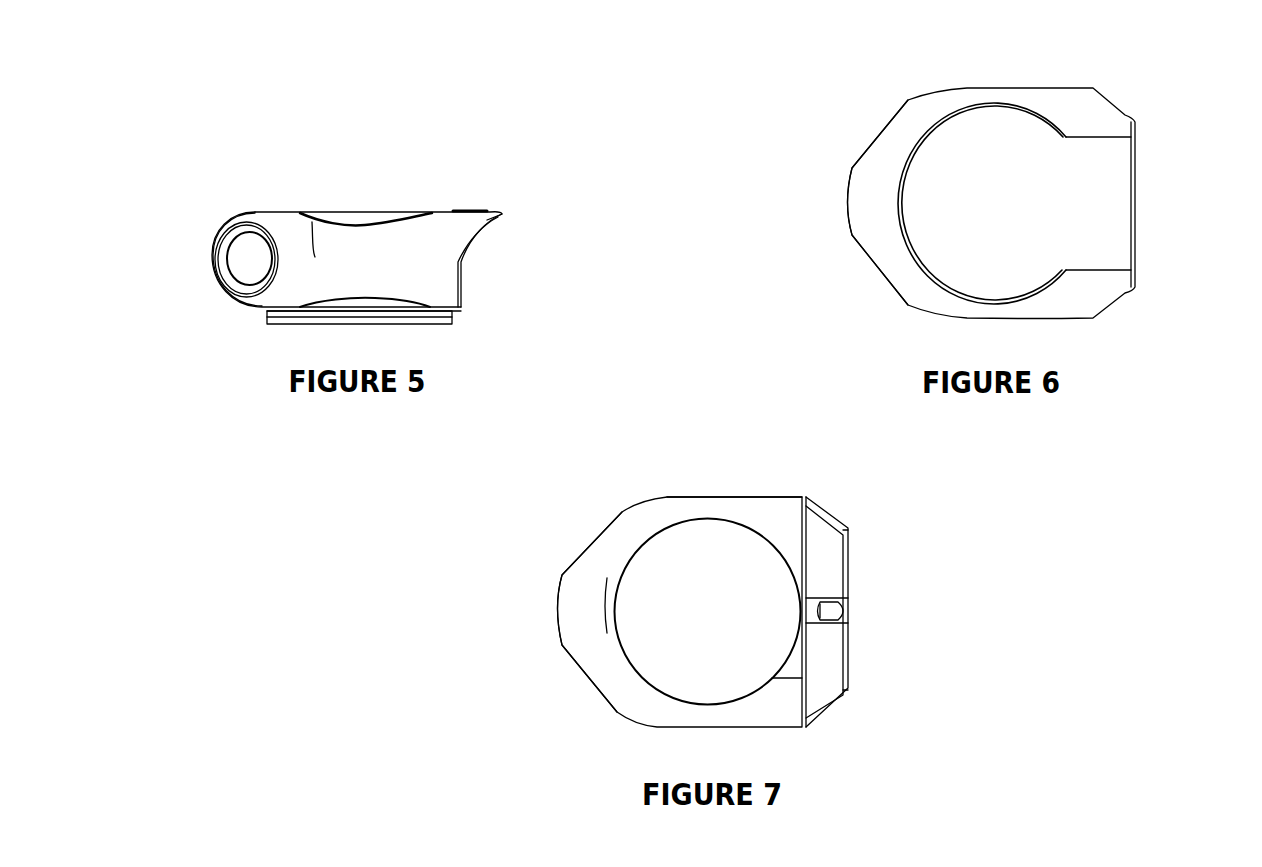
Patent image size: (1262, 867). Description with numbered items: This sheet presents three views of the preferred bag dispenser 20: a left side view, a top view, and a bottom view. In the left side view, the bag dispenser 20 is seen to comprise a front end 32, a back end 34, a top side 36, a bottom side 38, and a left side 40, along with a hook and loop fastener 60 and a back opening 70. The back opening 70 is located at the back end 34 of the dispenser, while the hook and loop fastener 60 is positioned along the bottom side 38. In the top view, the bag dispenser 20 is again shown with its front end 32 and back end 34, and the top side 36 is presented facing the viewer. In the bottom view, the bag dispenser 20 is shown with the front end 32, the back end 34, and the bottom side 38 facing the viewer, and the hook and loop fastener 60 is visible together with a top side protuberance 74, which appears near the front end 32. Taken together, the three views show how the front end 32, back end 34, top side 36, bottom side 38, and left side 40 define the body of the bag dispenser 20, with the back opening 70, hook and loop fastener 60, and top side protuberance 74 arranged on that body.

In FIG. 5, the bag dispenser 20 is at (438, 194).
In FIG. 6, the bag dispenser 20 is at (871, 127).
In FIG. 7, the bag dispenser 20 is at (762, 484).
In FIG. 5, the front end 32 is at (482, 267).
In FIG. 6, the front end 32 is at (1156, 211).
In FIG. 7, the front end 32 is at (869, 648).
In FIG. 5, the back end 34 is at (200, 272).
In FIG. 6, the back end 34 is at (834, 205).
In FIG. 7, the back end 34 is at (549, 623).
In FIG. 5, the top side 36 is at (357, 208).
In FIG. 6, the top side 36 is at (977, 143).
In FIG. 5, the bottom side 38 is at (262, 308).
In FIG. 7, the bottom side 38 is at (697, 507).
In FIG. 5, the left side 40 is at (312, 222).
In FIG. 5, the hook and loop fastener 60 is at (435, 325).
In FIG. 7, the hook and loop fastener 60 is at (640, 563).
In FIG. 5, the back opening 70 is at (235, 258).
In FIG. 7, the top side protuberance 74 is at (836, 613).